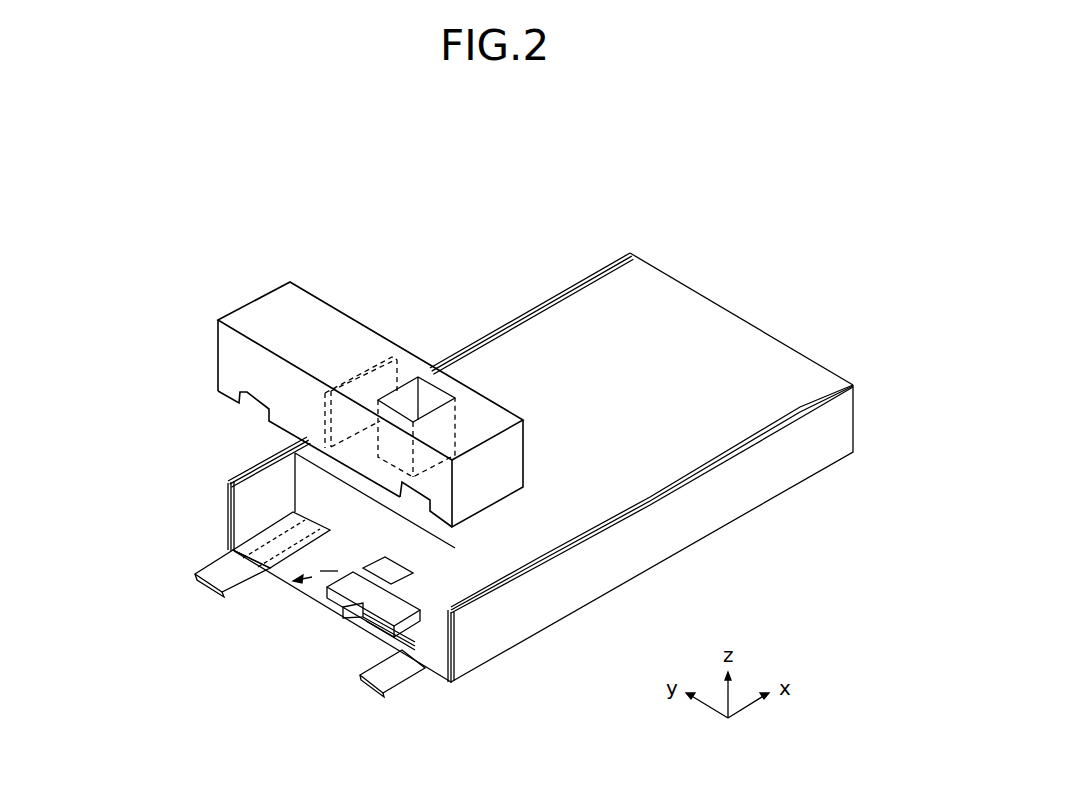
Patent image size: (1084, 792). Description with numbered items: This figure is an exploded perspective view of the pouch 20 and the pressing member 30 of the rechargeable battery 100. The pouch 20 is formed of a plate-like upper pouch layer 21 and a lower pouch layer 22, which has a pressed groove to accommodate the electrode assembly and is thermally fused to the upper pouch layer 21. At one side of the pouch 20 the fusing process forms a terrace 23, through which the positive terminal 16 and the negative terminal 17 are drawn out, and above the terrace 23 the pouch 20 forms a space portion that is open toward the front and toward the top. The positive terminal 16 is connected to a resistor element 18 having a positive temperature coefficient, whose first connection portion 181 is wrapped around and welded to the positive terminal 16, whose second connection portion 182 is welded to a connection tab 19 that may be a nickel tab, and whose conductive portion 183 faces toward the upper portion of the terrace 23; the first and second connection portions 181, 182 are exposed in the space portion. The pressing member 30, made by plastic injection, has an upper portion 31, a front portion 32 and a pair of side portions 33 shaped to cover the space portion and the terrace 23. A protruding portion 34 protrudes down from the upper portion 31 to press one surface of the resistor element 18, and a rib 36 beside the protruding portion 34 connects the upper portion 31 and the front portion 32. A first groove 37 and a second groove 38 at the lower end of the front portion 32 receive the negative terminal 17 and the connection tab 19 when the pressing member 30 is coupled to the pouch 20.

The rechargeable battery 100 is at (453, 209).
The pouch 20 is at (797, 533).
The upper pouch layer 21 is at (650, 468).
The lower pouch layer 22 is at (658, 537).
The pressing member 30 is at (385, 468).
The upper portion 31 is at (282, 307).
The front portion 32 is at (240, 365).
The side portion 33 is at (487, 487).
The protruding portion 34 is at (407, 397).
The rib 36 is at (367, 367).
The first groove 37 is at (243, 405).
The second groove 38 is at (413, 493).
The positive terminal 16 is at (333, 596).
The negative terminal 17 is at (217, 580).
The connection tab 19 is at (395, 682).
The resistor element 18 is at (293, 742).
The first connection portion 181 is at (337, 604).
The second connection portion 182 is at (387, 642).
The conductive portion 183 is at (367, 625).
The terrace 23 is at (290, 584).